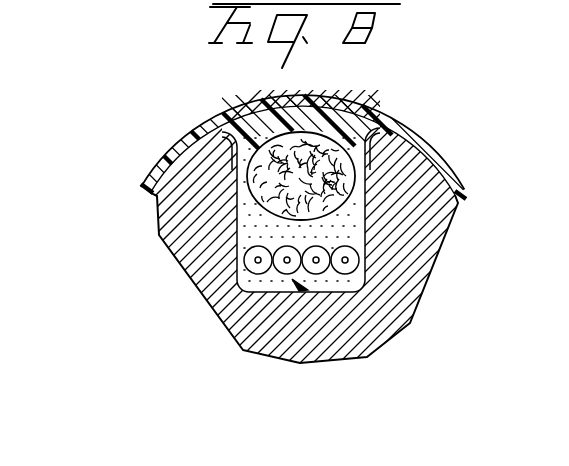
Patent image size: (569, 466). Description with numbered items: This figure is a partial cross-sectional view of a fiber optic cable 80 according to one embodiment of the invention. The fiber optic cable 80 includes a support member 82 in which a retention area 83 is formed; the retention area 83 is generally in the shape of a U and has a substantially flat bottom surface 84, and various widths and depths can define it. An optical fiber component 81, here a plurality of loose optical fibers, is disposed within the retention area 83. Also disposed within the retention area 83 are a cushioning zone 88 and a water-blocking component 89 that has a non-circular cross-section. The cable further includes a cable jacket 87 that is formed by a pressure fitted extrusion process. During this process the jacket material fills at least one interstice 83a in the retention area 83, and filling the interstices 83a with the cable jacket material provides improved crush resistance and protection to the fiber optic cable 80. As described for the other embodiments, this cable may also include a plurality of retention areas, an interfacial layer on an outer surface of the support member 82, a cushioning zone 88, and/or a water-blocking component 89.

The fiber optic cable 80 is at (475, 100).
The optical fiber component 81 is at (346, 261).
The support member 82 is at (216, 279).
The retention area 83 is at (158, 196).
The interstice 83a is at (238, 178).
The flat bottom surface 84 is at (289, 285).
The cable jacket 87 is at (246, 168).
The cushioning zone 88 is at (350, 232).
The water-blocking component 89 is at (356, 172).